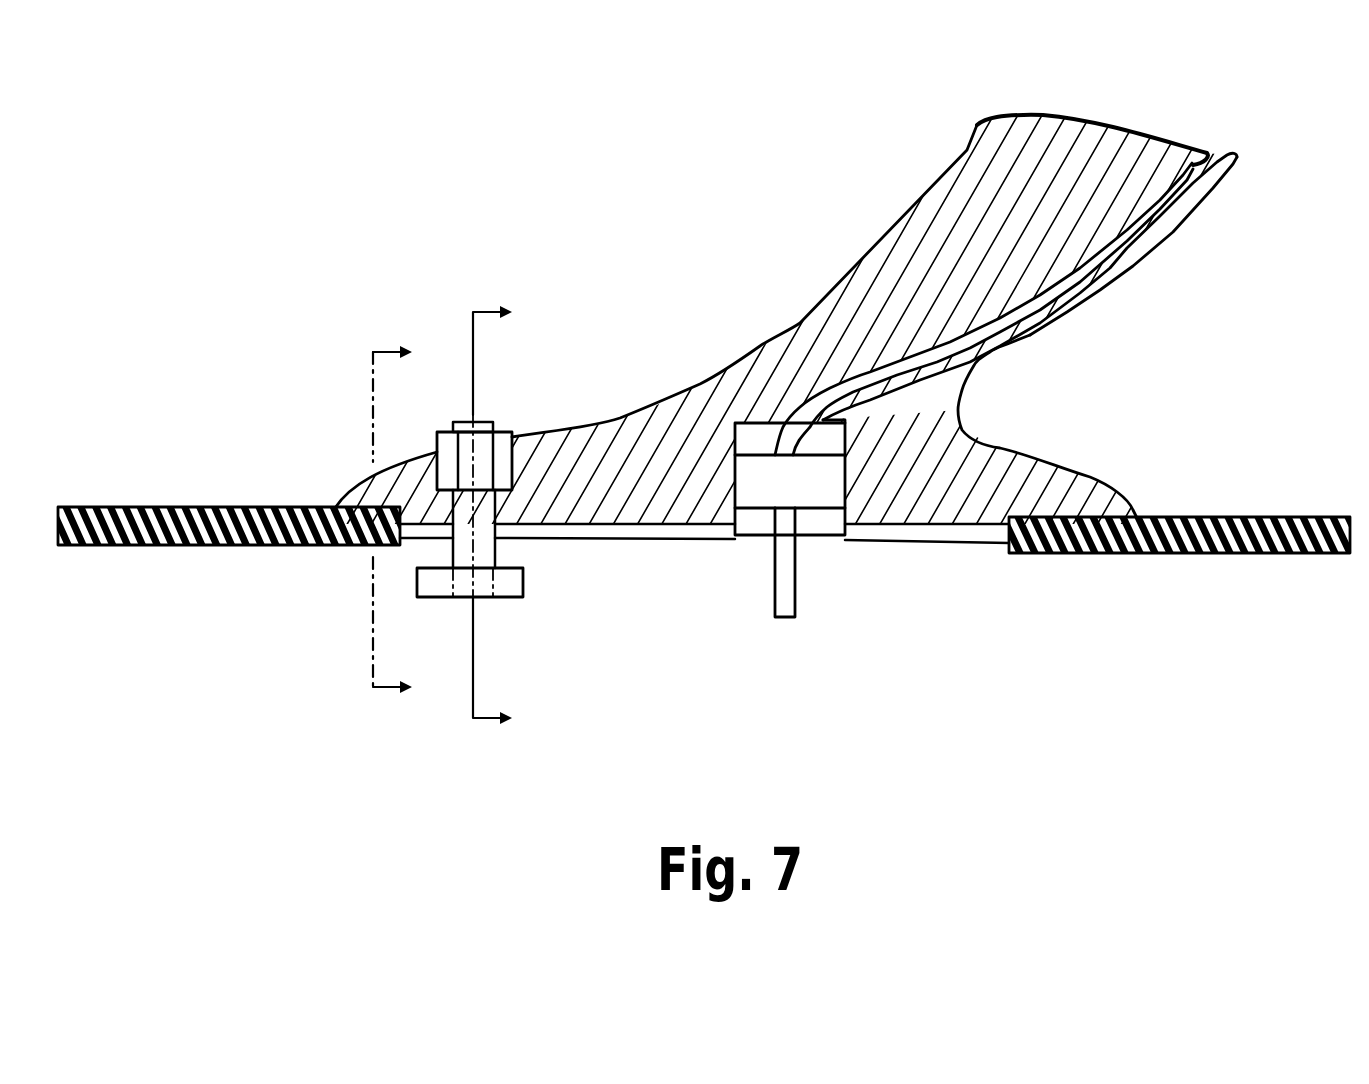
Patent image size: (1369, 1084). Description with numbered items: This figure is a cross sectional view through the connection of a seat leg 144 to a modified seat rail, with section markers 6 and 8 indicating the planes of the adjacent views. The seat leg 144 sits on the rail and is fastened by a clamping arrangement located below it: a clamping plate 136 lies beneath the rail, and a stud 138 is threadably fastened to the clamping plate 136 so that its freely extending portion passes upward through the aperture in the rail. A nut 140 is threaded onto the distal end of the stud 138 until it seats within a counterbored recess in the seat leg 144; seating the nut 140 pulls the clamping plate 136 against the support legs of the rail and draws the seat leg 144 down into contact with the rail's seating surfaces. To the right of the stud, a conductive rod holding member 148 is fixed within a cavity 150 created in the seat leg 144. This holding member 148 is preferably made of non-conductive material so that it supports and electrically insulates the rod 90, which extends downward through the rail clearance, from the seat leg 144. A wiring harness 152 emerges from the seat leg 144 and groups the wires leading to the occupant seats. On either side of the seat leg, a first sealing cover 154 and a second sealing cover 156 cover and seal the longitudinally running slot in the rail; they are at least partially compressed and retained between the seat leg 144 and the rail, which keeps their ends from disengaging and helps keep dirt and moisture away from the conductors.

The seat leg 144 is at (935, 252).
The cavity 150 is at (760, 437).
The wiring harness 152 is at (1123, 248).
The conductive rod holding member 148 is at (787, 468).
The rod 90 is at (783, 585).
The stud 138 is at (488, 423).
The nut 140 is at (500, 450).
The clamping plate 136 is at (517, 585).
The first sealing cover 154 is at (228, 508).
The second sealing cover 156 is at (1267, 518).
The section line 6- 6 is at (398, 523).
The section line 8- 8 is at (502, 515).